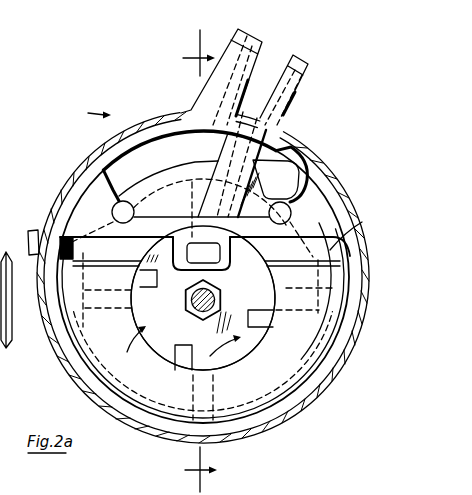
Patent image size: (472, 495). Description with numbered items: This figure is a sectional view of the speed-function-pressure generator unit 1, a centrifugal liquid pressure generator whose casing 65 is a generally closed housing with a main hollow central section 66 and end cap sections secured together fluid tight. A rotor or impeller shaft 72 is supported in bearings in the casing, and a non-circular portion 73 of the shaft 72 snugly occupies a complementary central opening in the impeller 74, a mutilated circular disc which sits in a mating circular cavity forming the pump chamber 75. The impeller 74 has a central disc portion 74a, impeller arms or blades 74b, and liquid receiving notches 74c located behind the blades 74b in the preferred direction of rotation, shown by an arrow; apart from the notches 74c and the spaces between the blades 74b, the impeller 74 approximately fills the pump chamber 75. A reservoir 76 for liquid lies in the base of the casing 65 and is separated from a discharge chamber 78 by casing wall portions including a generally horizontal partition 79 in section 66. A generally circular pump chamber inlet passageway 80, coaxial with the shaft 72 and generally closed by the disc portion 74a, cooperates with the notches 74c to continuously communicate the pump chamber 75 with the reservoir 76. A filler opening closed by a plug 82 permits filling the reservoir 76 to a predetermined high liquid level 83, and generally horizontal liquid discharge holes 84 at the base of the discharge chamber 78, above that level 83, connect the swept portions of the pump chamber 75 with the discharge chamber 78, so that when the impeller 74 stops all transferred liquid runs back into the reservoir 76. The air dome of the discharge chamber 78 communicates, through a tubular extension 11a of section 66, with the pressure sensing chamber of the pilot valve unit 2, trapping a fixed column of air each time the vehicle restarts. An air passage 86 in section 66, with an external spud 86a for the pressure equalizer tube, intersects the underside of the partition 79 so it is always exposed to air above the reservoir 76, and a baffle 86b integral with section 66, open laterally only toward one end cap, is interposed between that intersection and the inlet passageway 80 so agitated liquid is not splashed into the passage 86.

The speed-function-pressure generator unit 1 is at (91, 113).
The pilot valve unit 2 is at (197, 261).
The tubular extension 11a is at (233, 42).
The casing 65 is at (309, 401).
The main hollow central section 66 is at (317, 183).
The impeller shaft 72 is at (185, 299).
The non-circular portion of the shaft 73 is at (221, 298).
The impeller 74 is at (322, 302).
The central disc portion 74a is at (190, 336).
The impeller blades 74b is at (277, 316).
The liquid receiving notches 74c is at (263, 322).
The pump chamber 75 is at (63, 352).
The reservoir 76 is at (336, 293).
The discharge chamber 78 is at (186, 160).
The partition 79 is at (179, 217).
The pump chamber inlet passageway 80 is at (172, 345).
The plug 82 is at (32, 230).
The high liquid level 83 is at (352, 222).
The liquid discharge holes 84 is at (112, 212).
The air passage 86 is at (232, 158).
The external spud 86a is at (293, 96).
The baffle 86b is at (225, 258).